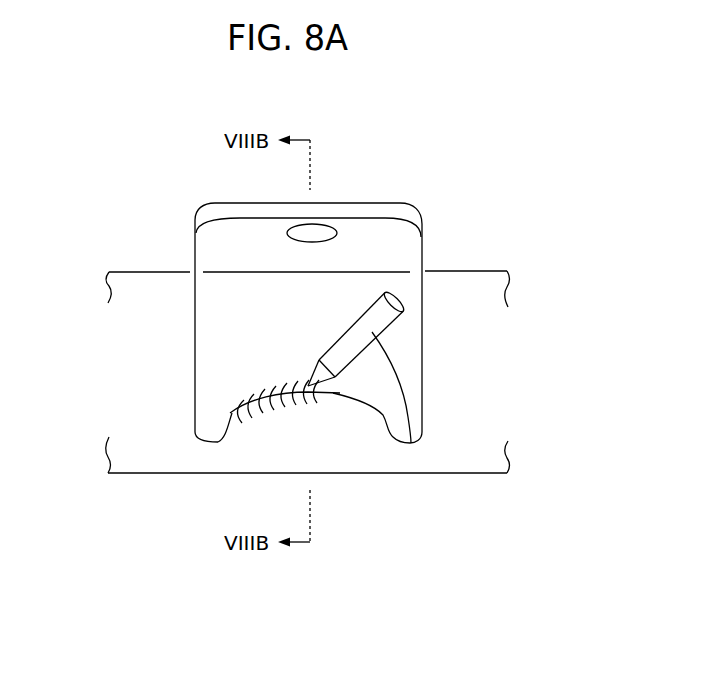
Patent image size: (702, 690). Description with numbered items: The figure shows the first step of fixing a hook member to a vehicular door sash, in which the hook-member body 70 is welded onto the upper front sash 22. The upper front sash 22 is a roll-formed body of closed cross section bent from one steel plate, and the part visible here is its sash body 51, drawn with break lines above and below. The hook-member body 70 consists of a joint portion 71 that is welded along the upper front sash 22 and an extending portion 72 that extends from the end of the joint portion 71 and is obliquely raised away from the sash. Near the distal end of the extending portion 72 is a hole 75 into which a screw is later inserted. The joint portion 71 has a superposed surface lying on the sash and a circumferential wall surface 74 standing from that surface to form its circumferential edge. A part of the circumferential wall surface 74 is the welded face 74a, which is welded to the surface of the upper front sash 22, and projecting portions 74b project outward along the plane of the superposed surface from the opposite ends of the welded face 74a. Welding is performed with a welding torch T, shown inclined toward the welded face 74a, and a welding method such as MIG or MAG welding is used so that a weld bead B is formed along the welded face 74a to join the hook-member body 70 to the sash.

The upper front sash 22 is at (147, 285).
The sash body 51 is at (493, 280).
The hook-member body 70 is at (408, 323).
The joint portion 71 is at (410, 359).
The extending portion 72 is at (414, 240).
The circumferential wall surface 74 is at (227, 489).
The welded face 74a is at (340, 394).
The projecting portions 74b is at (218, 442).
The hole 75 is at (315, 237).
The weld bead B is at (232, 410).
The welding torch T is at (411, 445).